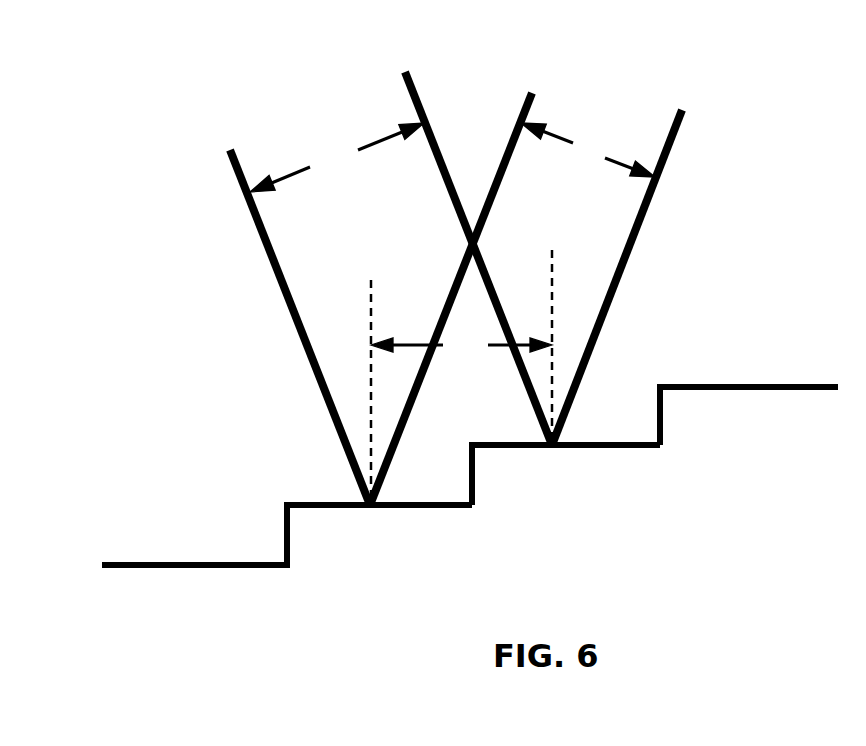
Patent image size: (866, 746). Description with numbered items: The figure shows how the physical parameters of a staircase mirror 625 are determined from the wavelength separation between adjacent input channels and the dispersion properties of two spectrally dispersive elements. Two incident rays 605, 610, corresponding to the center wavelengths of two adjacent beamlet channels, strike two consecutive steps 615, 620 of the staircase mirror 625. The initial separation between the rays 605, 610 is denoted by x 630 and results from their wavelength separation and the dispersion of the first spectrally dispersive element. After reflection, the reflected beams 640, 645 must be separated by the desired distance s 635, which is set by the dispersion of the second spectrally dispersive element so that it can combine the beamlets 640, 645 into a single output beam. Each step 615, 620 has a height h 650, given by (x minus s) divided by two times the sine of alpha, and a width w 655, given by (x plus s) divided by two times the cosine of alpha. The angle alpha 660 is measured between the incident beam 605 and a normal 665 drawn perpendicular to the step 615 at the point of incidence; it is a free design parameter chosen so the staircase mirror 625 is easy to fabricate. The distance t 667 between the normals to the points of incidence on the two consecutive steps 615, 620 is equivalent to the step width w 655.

The ray 605 is at (223, 137).
The ray 610 is at (404, 60).
The reflected beam 640 is at (533, 82).
The reflected beam 645 is at (690, 100).
The step 615 is at (305, 495).
The step 620 is at (590, 432).
The staircase mirror 625 is at (708, 468).
The initial separation x 630 is at (322, 137).
The desired separation s 635 is at (593, 130).
The incidence angle α 660 is at (338, 365).
The normal 665 is at (368, 270).
The distance t 667 is at (468, 387).
The height h 650 is at (522, 493).
The width w 655 is at (445, 545).